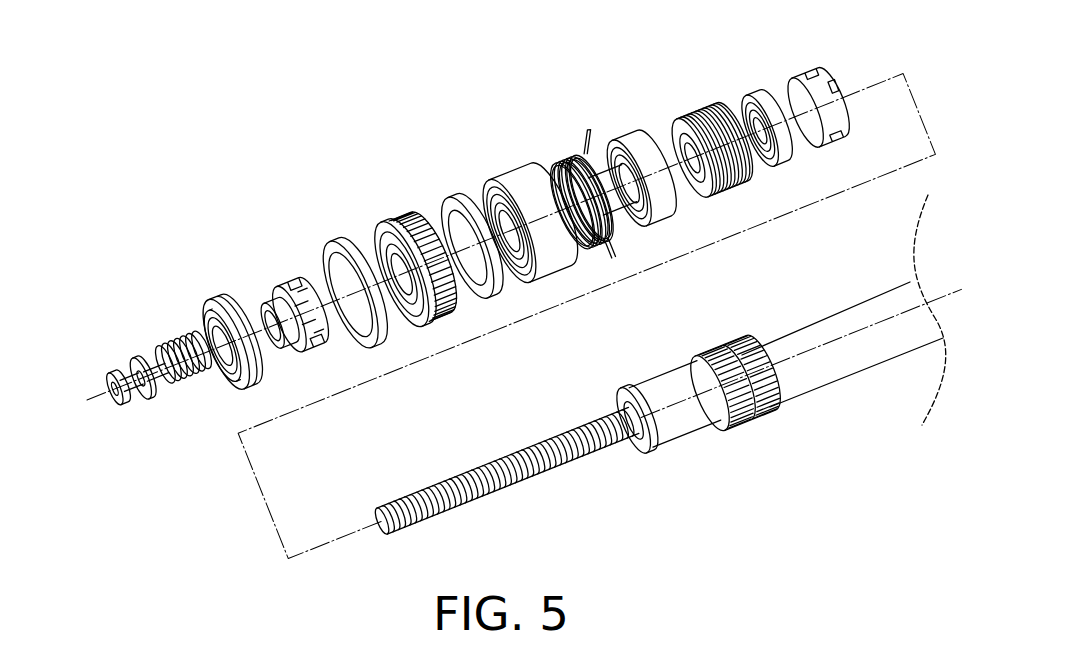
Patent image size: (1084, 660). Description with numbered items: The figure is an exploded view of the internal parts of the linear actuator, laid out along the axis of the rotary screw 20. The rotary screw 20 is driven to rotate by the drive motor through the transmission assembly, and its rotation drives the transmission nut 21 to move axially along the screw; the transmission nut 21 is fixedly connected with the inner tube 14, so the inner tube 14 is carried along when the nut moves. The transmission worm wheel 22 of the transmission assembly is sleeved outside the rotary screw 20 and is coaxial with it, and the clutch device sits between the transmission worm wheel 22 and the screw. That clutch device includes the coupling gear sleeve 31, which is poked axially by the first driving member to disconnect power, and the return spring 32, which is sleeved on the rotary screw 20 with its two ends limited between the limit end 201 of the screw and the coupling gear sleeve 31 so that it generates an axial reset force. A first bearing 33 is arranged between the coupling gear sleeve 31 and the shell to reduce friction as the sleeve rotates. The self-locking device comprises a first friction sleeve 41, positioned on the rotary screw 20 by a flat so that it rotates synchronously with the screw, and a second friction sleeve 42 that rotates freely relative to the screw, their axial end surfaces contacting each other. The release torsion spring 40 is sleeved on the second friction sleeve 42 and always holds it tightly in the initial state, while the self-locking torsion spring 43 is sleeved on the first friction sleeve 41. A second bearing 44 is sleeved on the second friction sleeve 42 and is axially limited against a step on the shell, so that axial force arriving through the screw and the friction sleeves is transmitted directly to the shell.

The inner tube 14 is at (813, 373).
The rotary screw 20 is at (620, 450).
The transmission nut 21 is at (660, 392).
The transmission worm wheel 22 is at (390, 212).
The coupling gear sleeve 31 is at (295, 272).
The return spring 32 is at (183, 340).
The first bearing 33 is at (228, 292).
The release torsion spring 40 is at (553, 157).
The first friction sleeve 41 is at (640, 137).
The second friction sleeve 42 is at (573, 150).
The self-locking torsion spring 43 is at (713, 103).
The second bearing 44 is at (513, 164).
The limit end 201 is at (118, 372).